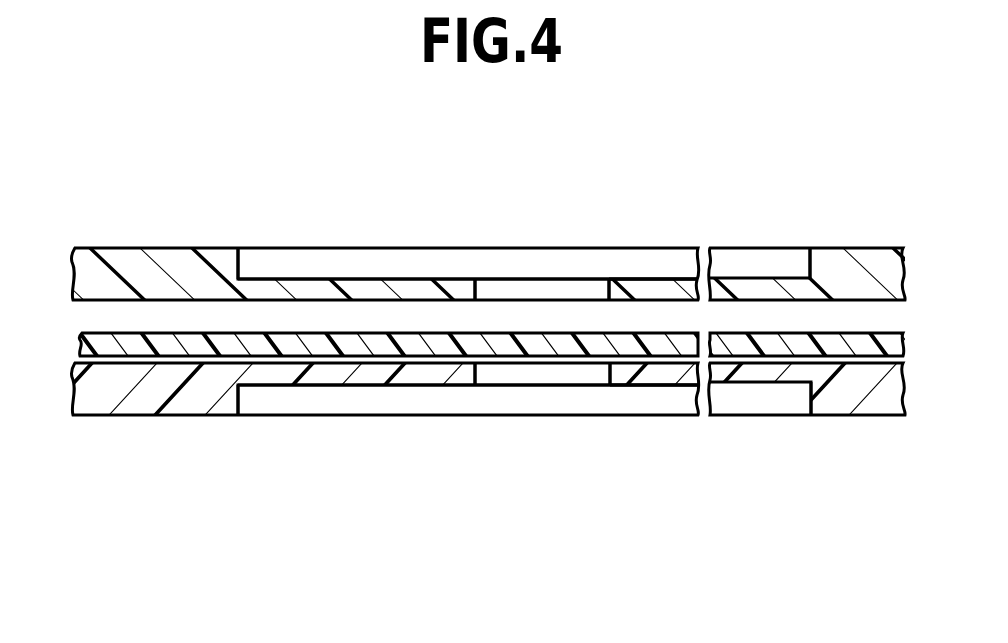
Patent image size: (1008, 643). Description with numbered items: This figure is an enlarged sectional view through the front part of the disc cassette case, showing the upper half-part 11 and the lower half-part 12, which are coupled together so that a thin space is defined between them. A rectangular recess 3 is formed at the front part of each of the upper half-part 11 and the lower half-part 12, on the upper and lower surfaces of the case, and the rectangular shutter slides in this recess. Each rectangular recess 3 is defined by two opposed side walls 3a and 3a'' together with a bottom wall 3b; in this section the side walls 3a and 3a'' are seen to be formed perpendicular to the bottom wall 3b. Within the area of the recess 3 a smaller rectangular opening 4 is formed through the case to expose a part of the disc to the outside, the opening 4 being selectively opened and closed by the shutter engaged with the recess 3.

The upper half-part 11 is at (113, 240).
The lower half-part 12 is at (140, 428).
The rectangular recess 3 is at (418, 262).
The side wall 3a is at (270, 339).
The bottom wall 3b is at (650, 280).
The side wall 3a'' is at (781, 334).
The rectangular opening 4 is at (606, 287).